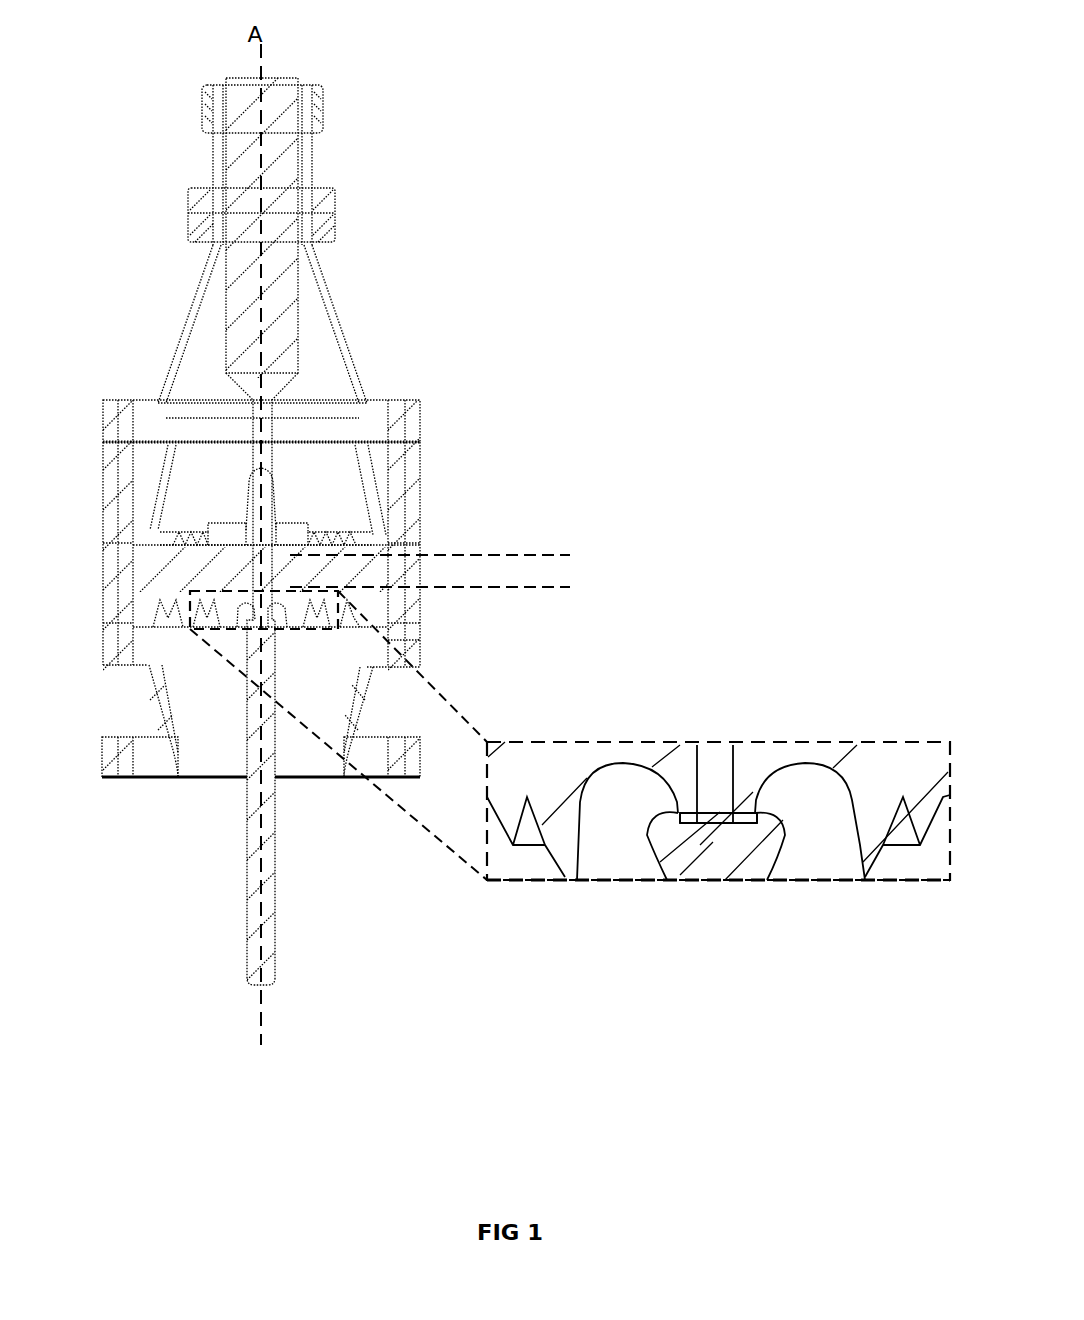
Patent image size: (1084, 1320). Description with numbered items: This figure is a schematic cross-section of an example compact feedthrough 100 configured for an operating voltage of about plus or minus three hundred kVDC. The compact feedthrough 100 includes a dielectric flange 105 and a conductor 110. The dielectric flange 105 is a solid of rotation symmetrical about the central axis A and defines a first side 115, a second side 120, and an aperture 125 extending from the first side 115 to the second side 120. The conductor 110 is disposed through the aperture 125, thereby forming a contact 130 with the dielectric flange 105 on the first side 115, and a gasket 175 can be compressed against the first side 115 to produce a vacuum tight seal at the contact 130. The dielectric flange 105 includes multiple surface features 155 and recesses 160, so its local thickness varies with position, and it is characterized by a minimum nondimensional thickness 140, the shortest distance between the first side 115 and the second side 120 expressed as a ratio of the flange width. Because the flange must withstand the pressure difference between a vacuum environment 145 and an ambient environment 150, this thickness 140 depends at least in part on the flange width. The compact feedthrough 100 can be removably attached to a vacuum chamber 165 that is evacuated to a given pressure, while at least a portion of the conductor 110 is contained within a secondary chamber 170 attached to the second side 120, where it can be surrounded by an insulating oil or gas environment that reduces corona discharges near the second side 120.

The compact feedthrough 100 is at (820, 18).
The dielectric flange 105 is at (415, 613).
The conductor 110 is at (280, 157).
The first side 115 is at (162, 616).
The second side 120 is at (165, 536).
The aperture 125 is at (697, 737).
The contact 130 is at (677, 822).
The minimum nondimensional thickness 140 is at (532, 555).
The vacuum environment 145 is at (188, 690).
The ambient environment 150 is at (330, 310).
The surface features 155 is at (312, 522).
The recesses 160 is at (293, 590).
The vacuum chamber 165 is at (415, 648).
The secondary chamber 170 is at (413, 412).
The gasket 175 is at (733, 827).